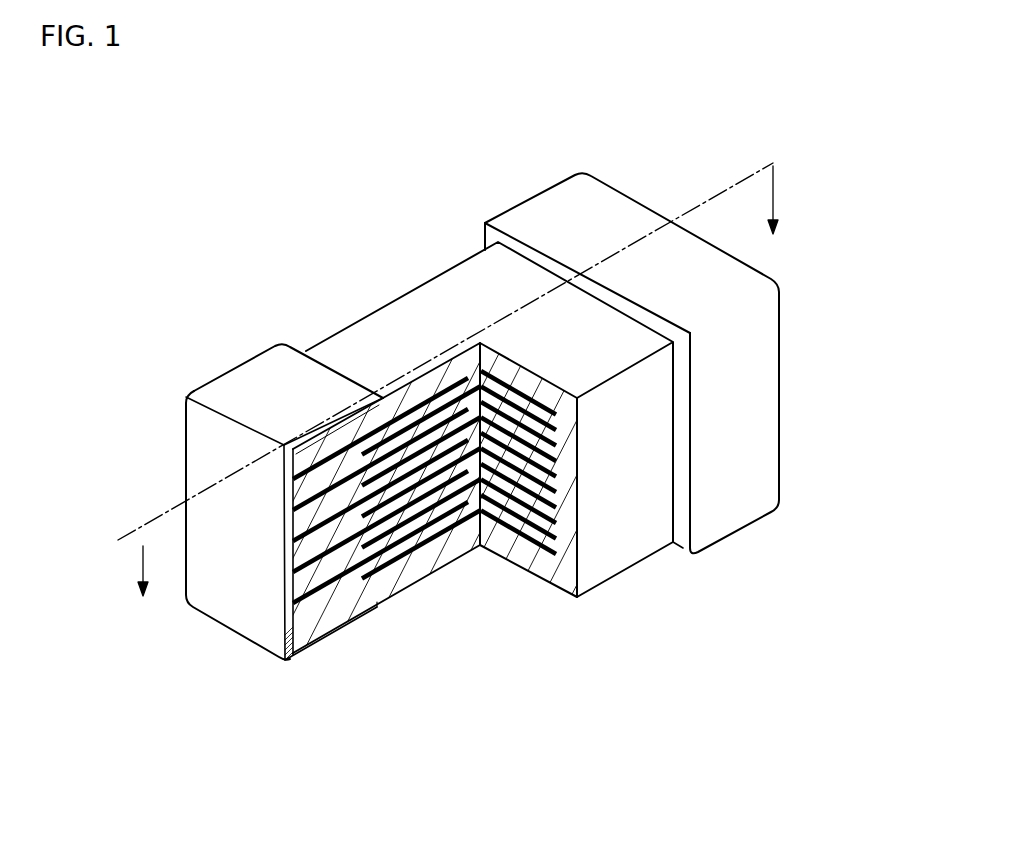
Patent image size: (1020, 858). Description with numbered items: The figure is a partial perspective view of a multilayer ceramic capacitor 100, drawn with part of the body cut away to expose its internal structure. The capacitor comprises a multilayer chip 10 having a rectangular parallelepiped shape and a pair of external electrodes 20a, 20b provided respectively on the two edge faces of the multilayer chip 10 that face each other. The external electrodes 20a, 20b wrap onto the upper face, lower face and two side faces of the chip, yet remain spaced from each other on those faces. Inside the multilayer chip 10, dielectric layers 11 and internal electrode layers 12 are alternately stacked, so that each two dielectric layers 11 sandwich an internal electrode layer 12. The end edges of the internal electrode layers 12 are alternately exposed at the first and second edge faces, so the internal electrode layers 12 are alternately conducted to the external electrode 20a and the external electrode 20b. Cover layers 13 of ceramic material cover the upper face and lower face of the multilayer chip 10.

The multilayer ceramic capacitor 100 is at (882, 103).
The multilayer chip 10 is at (318, 308).
The dielectric layer 11 is at (424, 538).
The internal electrode layer 12 is at (540, 556).
The cover layer 13 is at (456, 286).
The external electrode 20a is at (214, 380).
The external electrode 20b is at (541, 214).